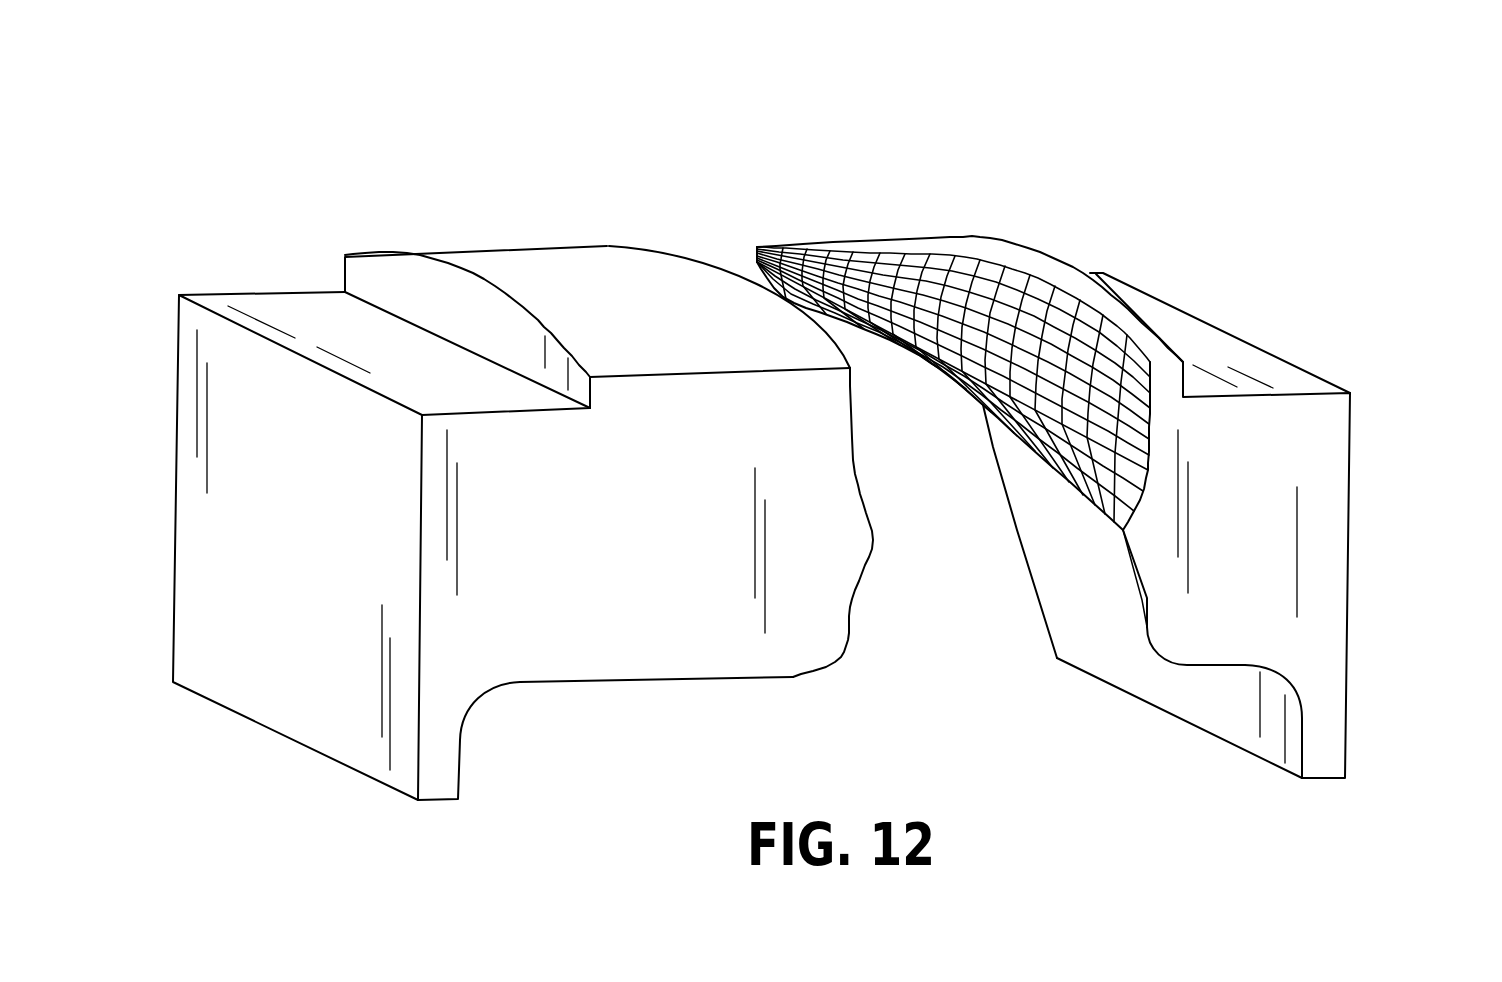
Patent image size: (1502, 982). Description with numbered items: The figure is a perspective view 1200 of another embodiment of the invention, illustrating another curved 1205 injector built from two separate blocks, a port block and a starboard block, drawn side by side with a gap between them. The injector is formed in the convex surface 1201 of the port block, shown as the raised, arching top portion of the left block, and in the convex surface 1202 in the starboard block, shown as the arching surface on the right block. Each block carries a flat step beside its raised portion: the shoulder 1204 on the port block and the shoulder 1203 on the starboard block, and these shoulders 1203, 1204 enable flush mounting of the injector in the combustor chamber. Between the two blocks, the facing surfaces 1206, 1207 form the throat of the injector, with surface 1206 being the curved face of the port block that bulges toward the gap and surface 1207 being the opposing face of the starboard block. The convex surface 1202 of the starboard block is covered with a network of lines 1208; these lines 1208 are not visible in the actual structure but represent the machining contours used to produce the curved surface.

The perspective view 1200 is at (821, 426).
The convex surface 1201 is at (597, 260).
The convex surface 1202 is at (1055, 326).
The shoulder 1203 is at (1120, 507).
The shoulder 1204 is at (374, 285).
The curved injector 1205 is at (729, 307).
The surface 1206 is at (881, 522).
The surface 1207 is at (940, 488).
The lines 1208 is at (1067, 377).